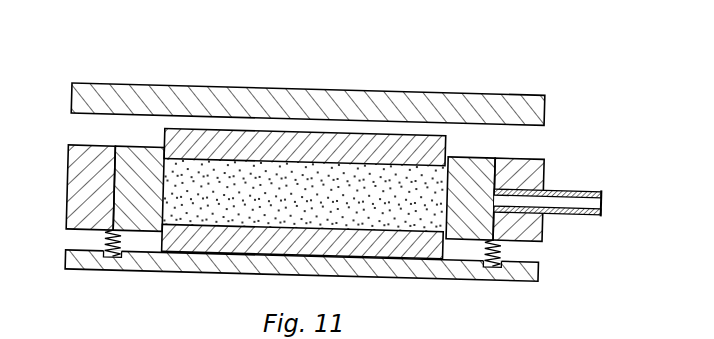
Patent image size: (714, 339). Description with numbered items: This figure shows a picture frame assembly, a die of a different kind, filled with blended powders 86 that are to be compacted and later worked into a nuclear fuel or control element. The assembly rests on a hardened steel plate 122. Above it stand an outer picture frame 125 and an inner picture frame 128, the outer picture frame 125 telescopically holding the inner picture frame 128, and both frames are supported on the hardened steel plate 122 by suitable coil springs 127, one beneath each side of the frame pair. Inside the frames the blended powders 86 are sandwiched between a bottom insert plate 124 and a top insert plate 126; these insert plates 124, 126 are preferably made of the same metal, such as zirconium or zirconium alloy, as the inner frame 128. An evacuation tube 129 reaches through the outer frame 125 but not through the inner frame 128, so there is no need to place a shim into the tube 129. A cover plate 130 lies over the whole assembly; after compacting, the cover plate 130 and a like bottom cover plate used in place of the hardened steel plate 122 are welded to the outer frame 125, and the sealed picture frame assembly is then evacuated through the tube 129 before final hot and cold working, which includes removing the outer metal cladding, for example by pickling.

The cover plate 130 is at (368, 102).
The top insert plate 126 is at (296, 146).
The blended powders 86 is at (352, 191).
The bottom insert plate 124 is at (294, 241).
The outer picture frame 125 is at (102, 194).
The inner picture frame 128 is at (152, 192).
The coil springs 127 is at (108, 238).
The evacuation tube 129 is at (566, 178).
The hardened steel plate 122 is at (541, 258).